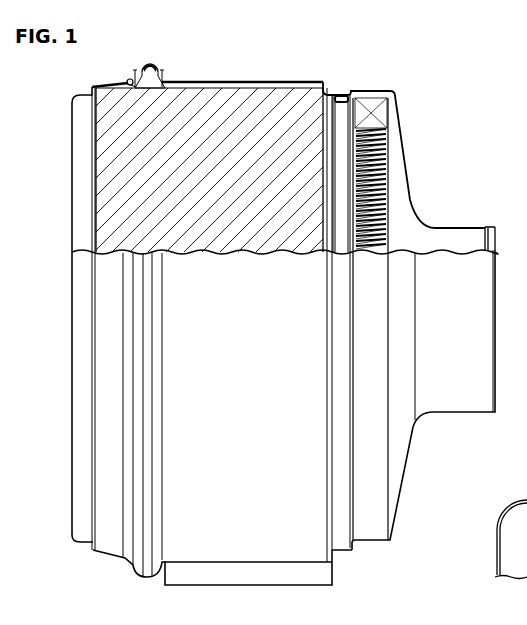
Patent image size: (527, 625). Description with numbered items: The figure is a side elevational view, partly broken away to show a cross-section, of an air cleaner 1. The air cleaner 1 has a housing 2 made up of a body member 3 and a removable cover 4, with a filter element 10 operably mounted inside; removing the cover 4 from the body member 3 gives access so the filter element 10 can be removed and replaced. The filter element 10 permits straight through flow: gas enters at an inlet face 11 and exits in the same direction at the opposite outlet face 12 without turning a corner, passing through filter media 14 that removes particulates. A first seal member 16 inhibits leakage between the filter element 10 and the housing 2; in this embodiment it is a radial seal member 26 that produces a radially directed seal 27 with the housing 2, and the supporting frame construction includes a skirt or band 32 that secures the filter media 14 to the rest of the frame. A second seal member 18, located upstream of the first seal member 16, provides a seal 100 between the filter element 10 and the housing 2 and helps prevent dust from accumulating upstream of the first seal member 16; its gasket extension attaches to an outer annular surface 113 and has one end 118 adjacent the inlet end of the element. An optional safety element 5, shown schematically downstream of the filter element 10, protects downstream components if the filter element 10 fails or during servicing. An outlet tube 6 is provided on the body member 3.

The air cleaner 1 is at (414, 72).
The filter element 10 is at (221, 80).
The filter media 14 is at (196, 93).
The outer annular surface 113 is at (255, 95).
The inlet face 11 is at (95, 182).
The end 118 is at (95, 88).
The second seal member 18 is at (127, 80).
The seal 100 is at (150, 65).
The skirt or band 32 is at (307, 80).
The outlet face 12 is at (322, 235).
The radially directed seal 27 is at (337, 92).
The first seal member 16 is at (343, 93).
The radial seal member 26 is at (352, 94).
The safety element 5 is at (375, 128).
The outlet tube 6 is at (495, 245).
The body member 3 is at (380, 543).
The housing 2 is at (362, 543).
The cover 4 is at (108, 556).